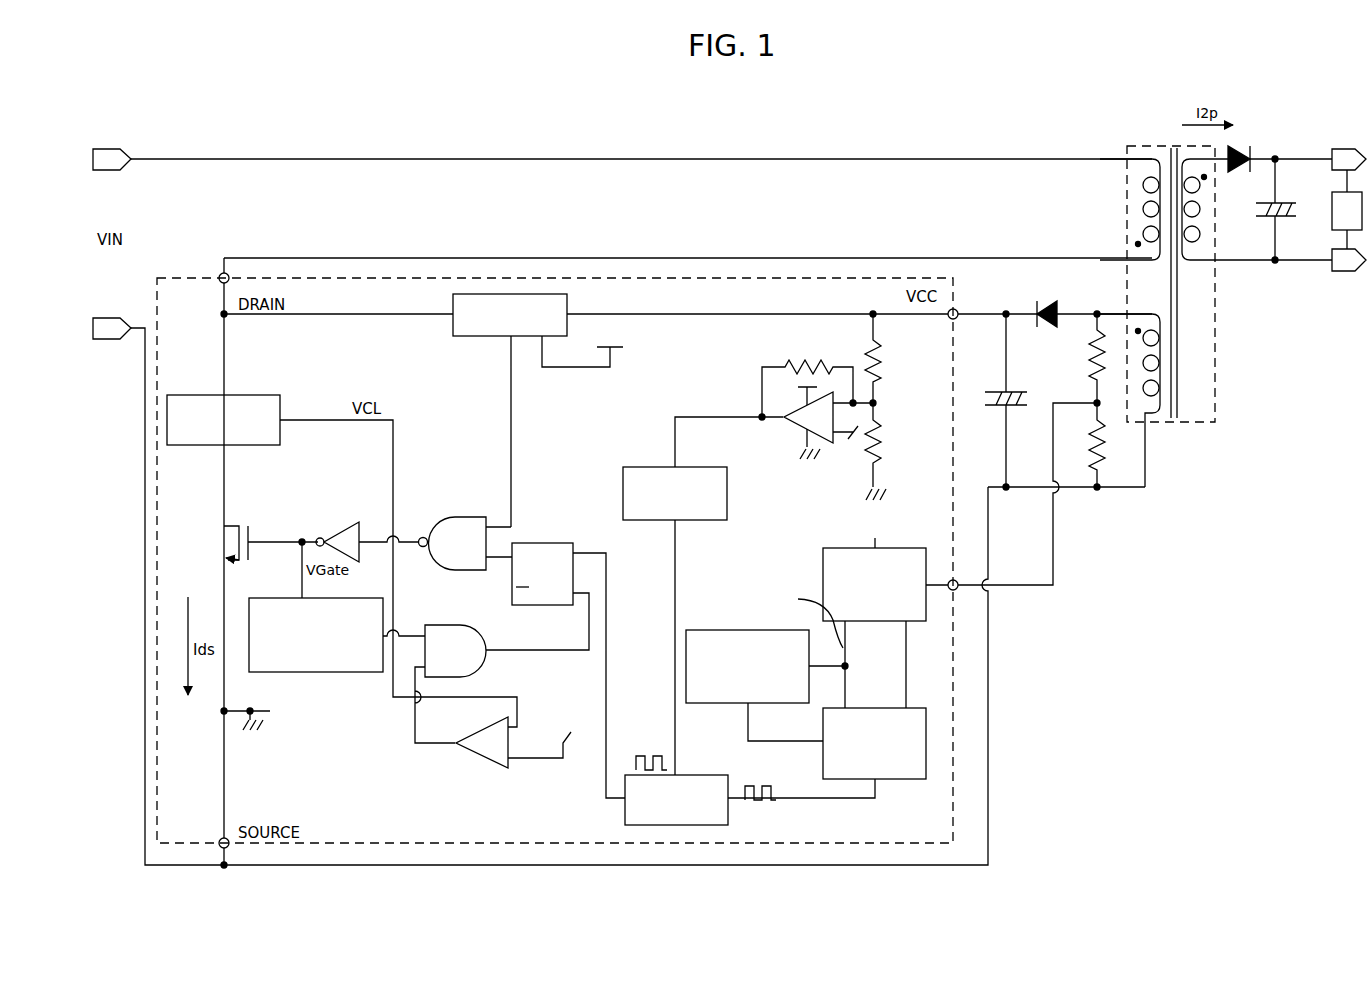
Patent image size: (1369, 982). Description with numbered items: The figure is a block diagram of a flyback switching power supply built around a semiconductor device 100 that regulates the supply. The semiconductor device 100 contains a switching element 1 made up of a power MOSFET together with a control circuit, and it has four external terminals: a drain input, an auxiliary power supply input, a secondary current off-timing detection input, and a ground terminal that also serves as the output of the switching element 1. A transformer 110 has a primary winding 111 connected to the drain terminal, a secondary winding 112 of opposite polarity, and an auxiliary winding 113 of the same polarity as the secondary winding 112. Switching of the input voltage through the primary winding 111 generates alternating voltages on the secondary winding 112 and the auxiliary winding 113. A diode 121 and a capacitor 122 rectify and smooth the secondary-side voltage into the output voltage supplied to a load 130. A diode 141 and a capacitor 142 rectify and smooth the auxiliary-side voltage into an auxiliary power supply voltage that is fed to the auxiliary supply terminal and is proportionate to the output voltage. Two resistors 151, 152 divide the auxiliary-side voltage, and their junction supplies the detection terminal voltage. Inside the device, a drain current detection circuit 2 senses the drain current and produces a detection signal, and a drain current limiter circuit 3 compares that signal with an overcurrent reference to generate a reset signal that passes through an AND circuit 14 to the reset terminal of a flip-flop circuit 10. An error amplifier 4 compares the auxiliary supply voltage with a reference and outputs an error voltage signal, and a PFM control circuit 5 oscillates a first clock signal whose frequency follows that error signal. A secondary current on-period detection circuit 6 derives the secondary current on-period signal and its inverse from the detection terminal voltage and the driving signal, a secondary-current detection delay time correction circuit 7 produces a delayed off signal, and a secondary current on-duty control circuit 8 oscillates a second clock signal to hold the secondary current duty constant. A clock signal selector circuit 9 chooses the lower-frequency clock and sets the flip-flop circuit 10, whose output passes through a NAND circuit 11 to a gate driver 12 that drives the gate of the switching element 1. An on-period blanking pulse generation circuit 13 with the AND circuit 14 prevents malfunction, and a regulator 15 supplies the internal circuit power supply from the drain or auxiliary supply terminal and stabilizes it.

The switching element 1 is at (248, 560).
The drain current detection circuit 2 is at (250, 395).
The drain current limiter circuit 3 is at (495, 770).
The error amplifier 4 is at (827, 450).
The PFM control circuit 5 is at (718, 467).
The secondary current on-period detection circuit 6 is at (910, 548).
The secondary-current detection delay time correction circuit 7 is at (740, 630).
The secondary current on-duty control circuit 8 is at (905, 780).
The clock signal selector circuit 9 is at (625, 815).
The flip-flop circuit 10 is at (552, 543).
The NAND circuit 11 is at (455, 517).
The gate driver 12 is at (332, 534).
The on-period blanking pulse generation circuit 13 is at (333, 672).
The AND circuit 14 is at (452, 625).
The regulator 15 is at (567, 304).
The semiconductor device 100 is at (205, 278).
The transformer 110 is at (1182, 316).
The primary winding 111 is at (1143, 212).
The secondary winding 112 is at (1200, 237).
The auxiliary winding 113 is at (1163, 410).
The diode 121 is at (1240, 146).
The capacitor 122 is at (1285, 201).
The load 130 is at (1332, 218).
The diode 141 is at (1042, 303).
The capacitor 142 is at (998, 407).
The resistor 151 is at (1090, 372).
The resistor 152 is at (1105, 463).